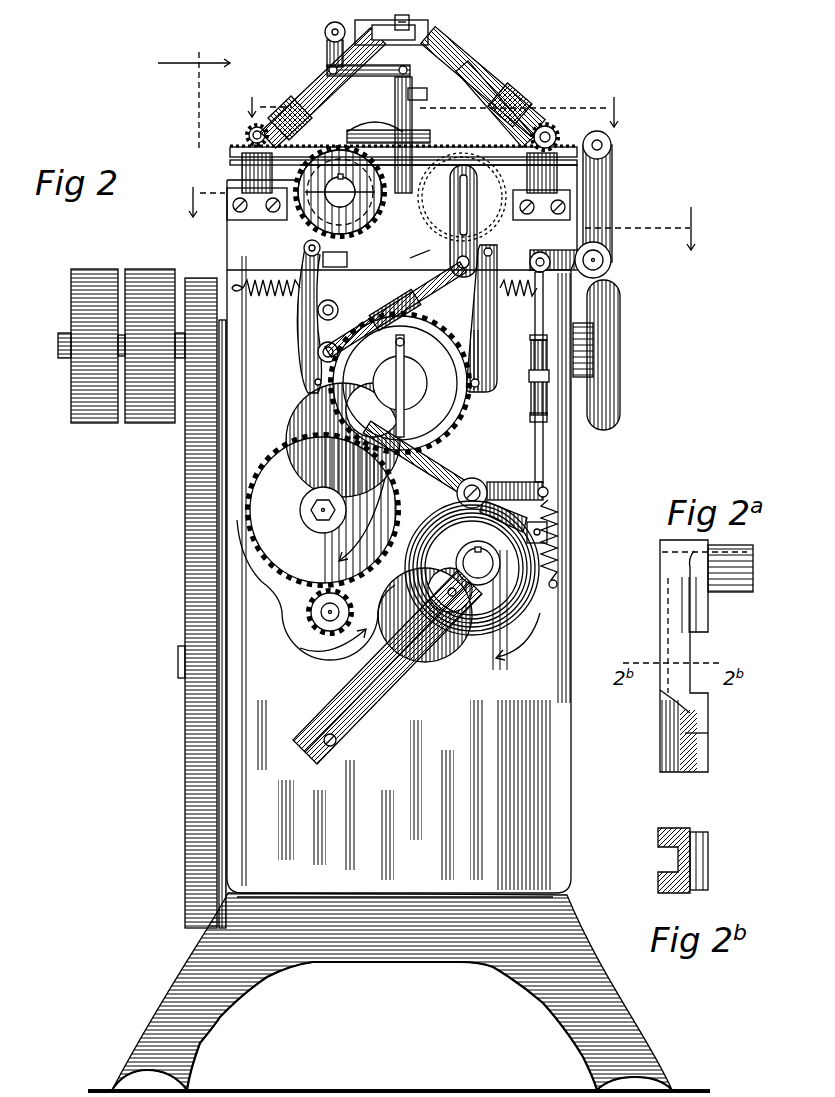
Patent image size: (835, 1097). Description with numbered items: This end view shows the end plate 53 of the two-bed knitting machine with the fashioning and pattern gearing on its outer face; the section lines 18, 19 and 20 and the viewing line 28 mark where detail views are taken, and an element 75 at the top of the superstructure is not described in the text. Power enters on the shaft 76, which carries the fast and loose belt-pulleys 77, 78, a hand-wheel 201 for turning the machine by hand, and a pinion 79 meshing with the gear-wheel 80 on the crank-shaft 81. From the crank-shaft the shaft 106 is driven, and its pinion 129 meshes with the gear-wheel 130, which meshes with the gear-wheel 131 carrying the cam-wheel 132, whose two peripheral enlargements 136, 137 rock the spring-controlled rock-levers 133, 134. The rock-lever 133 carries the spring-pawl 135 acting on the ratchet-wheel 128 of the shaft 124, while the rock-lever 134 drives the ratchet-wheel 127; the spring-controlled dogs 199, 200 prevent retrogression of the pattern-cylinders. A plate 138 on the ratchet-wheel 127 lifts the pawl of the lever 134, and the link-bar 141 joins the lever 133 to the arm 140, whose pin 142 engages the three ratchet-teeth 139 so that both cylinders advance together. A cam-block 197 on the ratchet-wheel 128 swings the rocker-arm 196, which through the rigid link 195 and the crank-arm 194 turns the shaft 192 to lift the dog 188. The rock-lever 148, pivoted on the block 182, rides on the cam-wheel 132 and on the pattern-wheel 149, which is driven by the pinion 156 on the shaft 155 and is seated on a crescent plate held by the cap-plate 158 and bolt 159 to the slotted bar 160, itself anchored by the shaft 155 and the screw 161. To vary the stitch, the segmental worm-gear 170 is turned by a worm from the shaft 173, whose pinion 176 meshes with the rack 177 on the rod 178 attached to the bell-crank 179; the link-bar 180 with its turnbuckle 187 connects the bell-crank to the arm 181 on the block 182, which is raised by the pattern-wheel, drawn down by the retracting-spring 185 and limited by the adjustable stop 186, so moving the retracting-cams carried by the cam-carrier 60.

In FIG. 2, the end plate 53 is at (540, 794).
In FIG. 2, the shaft 76 is at (58, 343).
In FIG. 2, the fast belt-pulley 77 is at (145, 423).
In FIG. 2, the loose belt-pulley 78 is at (100, 423).
In FIG. 2, the pinion 79 is at (200, 400).
In FIG. 2, the gear-wheel 80 is at (185, 532).
In FIG. 2, the crank-shaft 81 is at (180, 660).
In FIG. 2, the viewing line 28 is at (194, 99).
In FIG. 2, the section line 18 is at (432, 112).
In FIG. 2, the section line 19 is at (443, 215).
In FIG. 2, the rocker-arm 196 is at (398, 107).
In FIG. 2, the spring-controlled dog 200 is at (372, 132).
In FIG. 2, the pinion 176 is at (245, 130).
In FIG. 2, the dog 188 is at (327, 70).
In FIG. 2, the crank-arm 194 is at (327, 47).
In FIG. 2, the shaft 192 is at (325, 30).
In FIG. 2, the spring-controlled dog 199 is at (447, 175).
In FIG. 2, the rigid link 195 is at (436, 36).
In FIG. 2, the screw 75 is at (396, 22).
In FIG. 2, the segmental worm-gear 170 is at (530, 140).
In FIG. 2, the shaft 173 is at (580, 146).
In FIG. 2, the ratchet-teeth 139 is at (520, 113).
In FIG. 2, the cam-carrier 60 is at (487, 87).
In FIG. 2, the section line 20 is at (505, 73).
In FIG. 2, the rack 177 is at (600, 122).
In FIG. 2, the bell-crank 179 is at (612, 213).
In FIG. 2, the rod 178 is at (583, 178).
In FIG. 2, the plate 138 is at (500, 208).
In FIG. 2, the ratchet-wheel 127 is at (611, 267).
In FIG. 2, the cam-block 197 is at (340, 193).
In FIG. 2, the shaft 124 is at (323, 197).
In FIG. 2, the ratchet-wheel 128 is at (300, 240).
In FIG. 2, the pin 142 is at (447, 215).
In FIG. 2, the enlargement 136 is at (373, 478).
In FIG. 2, the rock-lever 133 is at (298, 365).
In FIG. 2, the spring-pawl 135 is at (298, 297).
In FIG. 2, the enlargement 137 is at (318, 348).
In FIG. 2, the link-bar 141 is at (396, 288).
In FIG. 2, the rock-lever 134 is at (493, 343).
In FIG. 2, the arm 140 is at (496, 300).
In FIG. 2, the gear-wheel 131 is at (367, 450).
In FIG. 2, the cam-wheel 132 is at (347, 408).
In FIG. 2, the turnbuckle 187 is at (532, 403).
In FIG. 2, the link-bar 180 is at (540, 460).
In FIG. 2, the hand-wheel 201 is at (618, 328).
In FIG. 2, the rock-lever 148 is at (421, 462).
In FIG. 2, the block 182 is at (461, 468).
In FIG. 2, the arm 181 is at (547, 483).
In FIG. 2, the adjustable stop 186 is at (550, 517).
In FIG. 2, the retracting-spring 185 is at (556, 542).
In FIG. 2, the pattern-wheel 149 is at (463, 593).
In FIG. 2, the shaft 155 is at (510, 573).
In FIG. 2, the pinion 156 is at (537, 592).
In FIG. 2, the cap-plate 158 is at (503, 608).
In FIG. 2, the bolt 159 is at (460, 613).
In FIG. 2, the gear-wheel 130 is at (282, 548).
In FIG. 2, the pinion 129 is at (310, 610).
In FIG. 2, the shaft 106 is at (320, 613).
In FIG. 2, the slotted bar 160 is at (365, 704).
In FIG. 2A, the slotted bar 160 is at (688, 772).
In FIG. 2B, the slotted bar 160 is at (678, 820).
In FIG. 2, the screw 161 is at (337, 745).